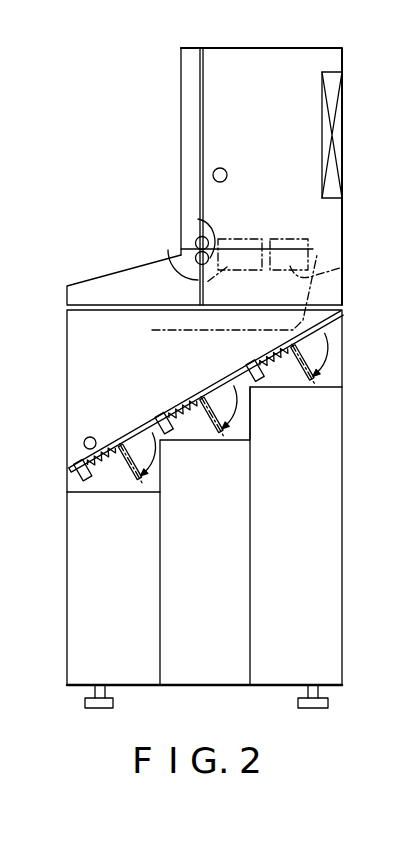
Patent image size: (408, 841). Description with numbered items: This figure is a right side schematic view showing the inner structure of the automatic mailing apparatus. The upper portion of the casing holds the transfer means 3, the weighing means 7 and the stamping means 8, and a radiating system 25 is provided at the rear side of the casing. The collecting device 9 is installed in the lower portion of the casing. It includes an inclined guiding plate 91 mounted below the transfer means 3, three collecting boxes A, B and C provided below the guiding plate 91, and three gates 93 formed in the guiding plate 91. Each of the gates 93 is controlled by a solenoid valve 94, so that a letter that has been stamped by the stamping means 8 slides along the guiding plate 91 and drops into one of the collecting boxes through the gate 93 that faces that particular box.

The radiating system 25 is at (338, 153).
The transfer means 3 is at (198, 219).
The weighing means 7 is at (174, 259).
The stamping means 8 is at (340, 268).
The collecting device 9 is at (315, 553).
The inclined guiding plate 91 is at (262, 380).
The gates 93 is at (152, 423).
The solenoid valve 94 is at (75, 474).